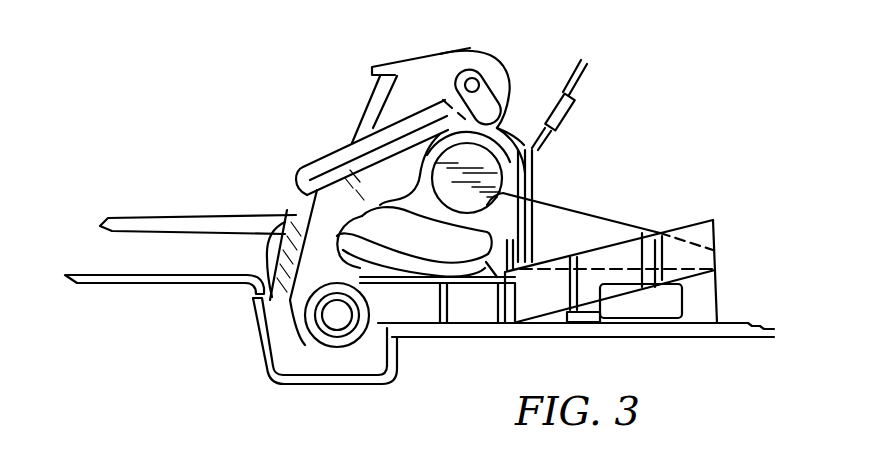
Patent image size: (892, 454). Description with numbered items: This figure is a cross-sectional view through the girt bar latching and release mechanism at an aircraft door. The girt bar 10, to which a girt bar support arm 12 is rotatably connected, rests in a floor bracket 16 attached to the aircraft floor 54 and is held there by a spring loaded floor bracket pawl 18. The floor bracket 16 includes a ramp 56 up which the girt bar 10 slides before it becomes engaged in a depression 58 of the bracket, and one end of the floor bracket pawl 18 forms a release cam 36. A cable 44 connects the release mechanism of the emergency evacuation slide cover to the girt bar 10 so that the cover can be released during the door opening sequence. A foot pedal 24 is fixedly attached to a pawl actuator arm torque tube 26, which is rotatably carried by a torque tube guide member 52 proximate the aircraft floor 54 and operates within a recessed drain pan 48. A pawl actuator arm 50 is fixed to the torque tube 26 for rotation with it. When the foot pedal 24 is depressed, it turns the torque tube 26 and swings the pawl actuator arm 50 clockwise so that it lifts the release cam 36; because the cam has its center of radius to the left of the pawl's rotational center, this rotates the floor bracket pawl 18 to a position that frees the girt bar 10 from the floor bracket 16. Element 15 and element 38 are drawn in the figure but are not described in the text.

The girt bar 10 is at (500, 175).
The girt bar support arm 12 is at (175, 219).
The spacer 15 is at (585, 315).
The floor bracket 16 is at (605, 232).
The floor bracket pawl 18 is at (507, 82).
The foot pedal 24 is at (342, 150).
The pawl actuator arm torque tube 26 is at (340, 348).
The release cam 36 is at (480, 250).
The block end face 38 is at (717, 250).
The cable 44 is at (575, 100).
The recessed drain pan 48 is at (362, 386).
The pawl actuator arm 50 is at (238, 233).
The torque tube guide member 52 is at (293, 363).
The aircraft floor 54 is at (738, 323).
The ramp 56 is at (593, 212).
The depression 58 is at (530, 230).